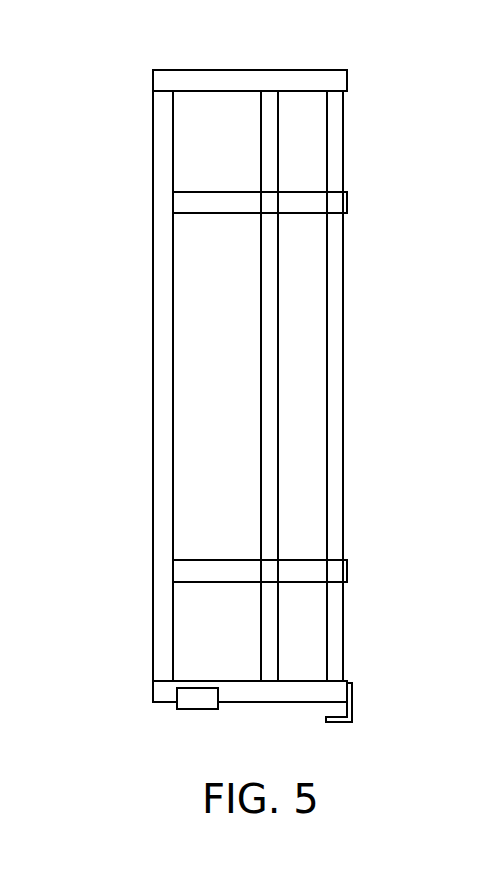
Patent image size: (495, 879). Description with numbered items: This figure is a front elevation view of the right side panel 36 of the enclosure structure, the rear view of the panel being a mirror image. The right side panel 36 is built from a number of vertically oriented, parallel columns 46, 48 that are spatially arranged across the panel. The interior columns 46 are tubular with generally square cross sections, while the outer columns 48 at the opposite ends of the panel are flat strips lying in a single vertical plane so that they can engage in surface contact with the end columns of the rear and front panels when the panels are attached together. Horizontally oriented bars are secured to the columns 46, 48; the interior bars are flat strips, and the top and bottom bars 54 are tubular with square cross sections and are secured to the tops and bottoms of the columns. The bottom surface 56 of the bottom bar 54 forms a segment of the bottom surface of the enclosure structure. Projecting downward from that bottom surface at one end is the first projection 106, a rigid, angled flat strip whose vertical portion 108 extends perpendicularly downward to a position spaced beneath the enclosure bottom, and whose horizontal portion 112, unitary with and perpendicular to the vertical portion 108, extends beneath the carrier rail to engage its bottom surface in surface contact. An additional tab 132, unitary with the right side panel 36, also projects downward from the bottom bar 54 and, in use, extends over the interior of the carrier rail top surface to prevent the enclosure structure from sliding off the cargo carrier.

The right side panel 36 is at (269, 398).
The interior column 46 is at (268, 329).
The outer column 48 is at (160, 405).
The top and bottom bar 54 is at (223, 80).
The bottom surface of the bottom bar 56 is at (235, 702).
The first projection 106 is at (396, 712).
The vertical portion 108 is at (353, 693).
The horizontal portion 112 is at (358, 712).
The additional tab 132 is at (187, 710).